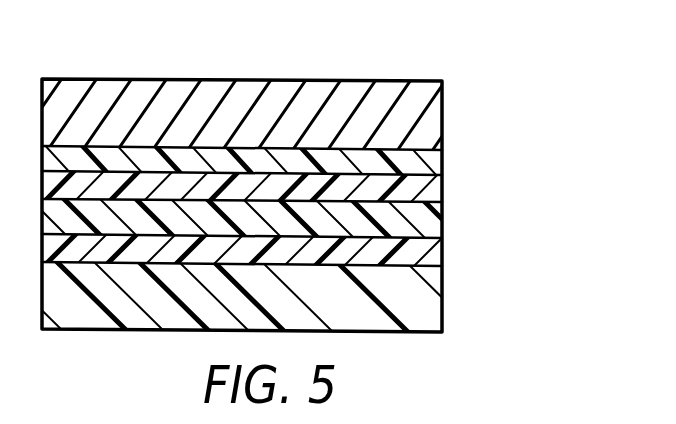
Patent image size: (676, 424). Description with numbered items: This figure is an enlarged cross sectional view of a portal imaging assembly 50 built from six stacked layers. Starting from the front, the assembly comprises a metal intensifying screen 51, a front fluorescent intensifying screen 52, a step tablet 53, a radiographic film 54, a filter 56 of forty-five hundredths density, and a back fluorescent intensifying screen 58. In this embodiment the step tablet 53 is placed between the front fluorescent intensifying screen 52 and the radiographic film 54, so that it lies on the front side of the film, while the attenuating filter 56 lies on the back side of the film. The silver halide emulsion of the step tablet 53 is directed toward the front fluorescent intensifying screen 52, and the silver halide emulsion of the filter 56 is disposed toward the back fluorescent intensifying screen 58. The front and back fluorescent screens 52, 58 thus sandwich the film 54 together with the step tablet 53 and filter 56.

The imaging assembly 50 is at (470, 55).
The metal intensifying screen 51 is at (442, 110).
The front fluorescent intensifying screen 52 is at (442, 160).
The step tablet 53 is at (442, 186).
The radiographic film 54 is at (442, 222).
The 0.45 density filter 56 is at (442, 250).
The back fluorescent intensifying screen 58 is at (442, 290).